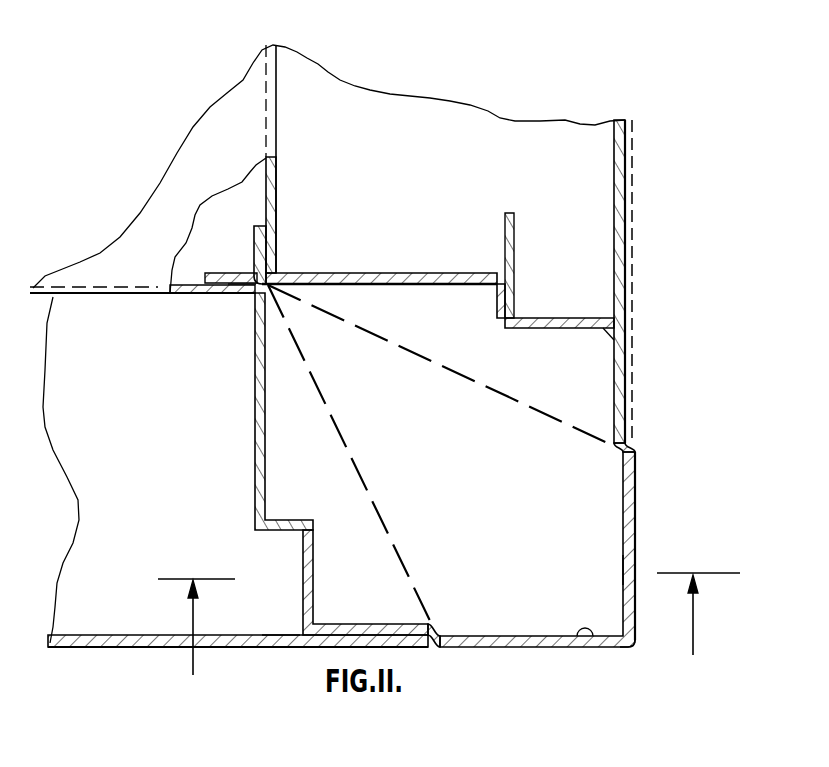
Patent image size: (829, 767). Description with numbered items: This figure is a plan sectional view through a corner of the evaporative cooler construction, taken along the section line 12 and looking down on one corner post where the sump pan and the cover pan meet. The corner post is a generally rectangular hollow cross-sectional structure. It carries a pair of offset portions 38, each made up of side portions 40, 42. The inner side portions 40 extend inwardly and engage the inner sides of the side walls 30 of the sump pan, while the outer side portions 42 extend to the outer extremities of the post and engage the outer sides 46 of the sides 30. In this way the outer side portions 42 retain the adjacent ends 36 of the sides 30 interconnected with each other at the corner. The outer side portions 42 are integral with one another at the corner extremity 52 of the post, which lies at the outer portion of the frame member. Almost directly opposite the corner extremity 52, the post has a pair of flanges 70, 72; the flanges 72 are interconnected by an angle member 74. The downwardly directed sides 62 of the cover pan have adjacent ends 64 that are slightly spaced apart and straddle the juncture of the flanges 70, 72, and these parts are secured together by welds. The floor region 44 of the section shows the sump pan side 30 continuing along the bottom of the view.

The section line for FIG. 12 is at (449, 624).
The sides 30 is at (628, 380).
The adjacent ends 36 is at (592, 640).
The offset portions 38 is at (612, 446).
The side portions 40 is at (608, 378).
The outer side portions 42 is at (636, 490).
The floor panel portion 44 is at (273, 634).
The outer sides 46 is at (629, 567).
The corner extremities 52 is at (637, 653).
The downwardly directed sides 62 is at (279, 152).
The adjacent ends 64 is at (283, 268).
The flanges 70 is at (228, 295).
The flanges 72 is at (264, 253).
The angle member 74 is at (252, 252).